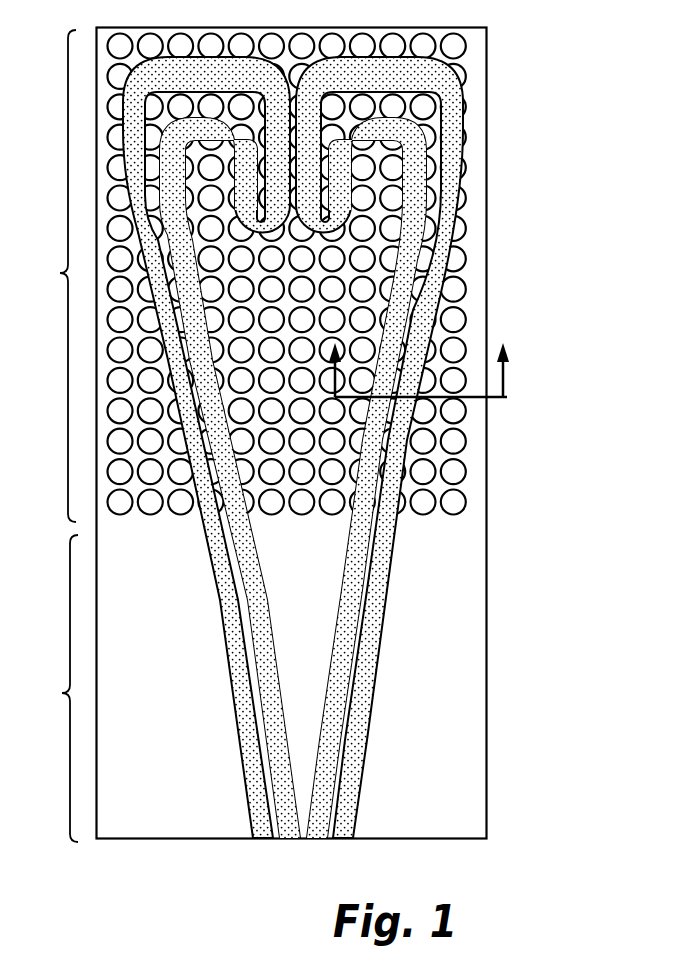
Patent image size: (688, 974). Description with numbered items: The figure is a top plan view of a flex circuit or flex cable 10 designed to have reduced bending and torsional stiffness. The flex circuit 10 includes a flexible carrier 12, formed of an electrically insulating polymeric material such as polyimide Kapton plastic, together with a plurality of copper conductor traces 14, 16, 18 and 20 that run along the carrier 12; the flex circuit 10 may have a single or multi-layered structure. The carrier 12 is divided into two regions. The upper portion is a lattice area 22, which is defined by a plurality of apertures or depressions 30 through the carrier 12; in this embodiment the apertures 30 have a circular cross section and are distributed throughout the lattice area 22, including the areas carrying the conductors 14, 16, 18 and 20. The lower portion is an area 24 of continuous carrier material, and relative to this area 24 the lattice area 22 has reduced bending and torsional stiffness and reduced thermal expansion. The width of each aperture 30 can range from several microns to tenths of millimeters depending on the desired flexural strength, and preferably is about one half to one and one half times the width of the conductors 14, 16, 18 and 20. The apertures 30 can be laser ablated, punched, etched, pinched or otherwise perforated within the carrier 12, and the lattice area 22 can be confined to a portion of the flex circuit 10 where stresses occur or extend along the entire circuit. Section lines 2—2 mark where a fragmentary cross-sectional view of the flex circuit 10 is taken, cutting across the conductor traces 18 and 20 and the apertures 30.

The flex circuit 10 is at (522, 558).
The flexible carrier 12 is at (487, 640).
The copper conductor trace 14 is at (232, 697).
The copper conductor trace 16 is at (276, 675).
The copper conductor trace 18 is at (331, 665).
The copper conductor trace 20 is at (375, 683).
The lattice area 22 is at (49, 276).
The area of continuous carrier material 24 is at (55, 688).
The apertures 30 is at (466, 411).
The section lines 2— 2 is at (423, 357).